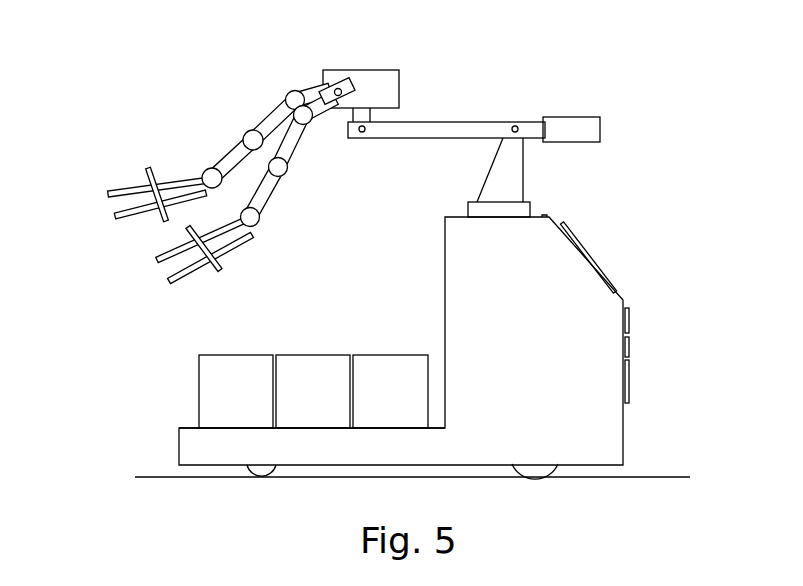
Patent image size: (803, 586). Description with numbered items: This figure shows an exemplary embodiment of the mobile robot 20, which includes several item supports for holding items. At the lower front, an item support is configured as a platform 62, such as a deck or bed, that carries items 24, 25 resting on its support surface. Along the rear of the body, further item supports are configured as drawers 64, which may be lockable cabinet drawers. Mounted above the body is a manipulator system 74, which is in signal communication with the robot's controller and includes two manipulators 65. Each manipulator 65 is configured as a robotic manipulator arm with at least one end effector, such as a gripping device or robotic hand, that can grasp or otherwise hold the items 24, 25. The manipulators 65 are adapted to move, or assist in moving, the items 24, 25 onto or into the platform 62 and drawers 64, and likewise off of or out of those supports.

The mobile robot 20 is at (597, 54).
The item 24 is at (225, 403).
The item 25 is at (379, 403).
The platform 62 is at (185, 428).
The drawer 64 is at (630, 318).
The manipulator 65 is at (110, 204).
The manipulator system 74 is at (326, 181).